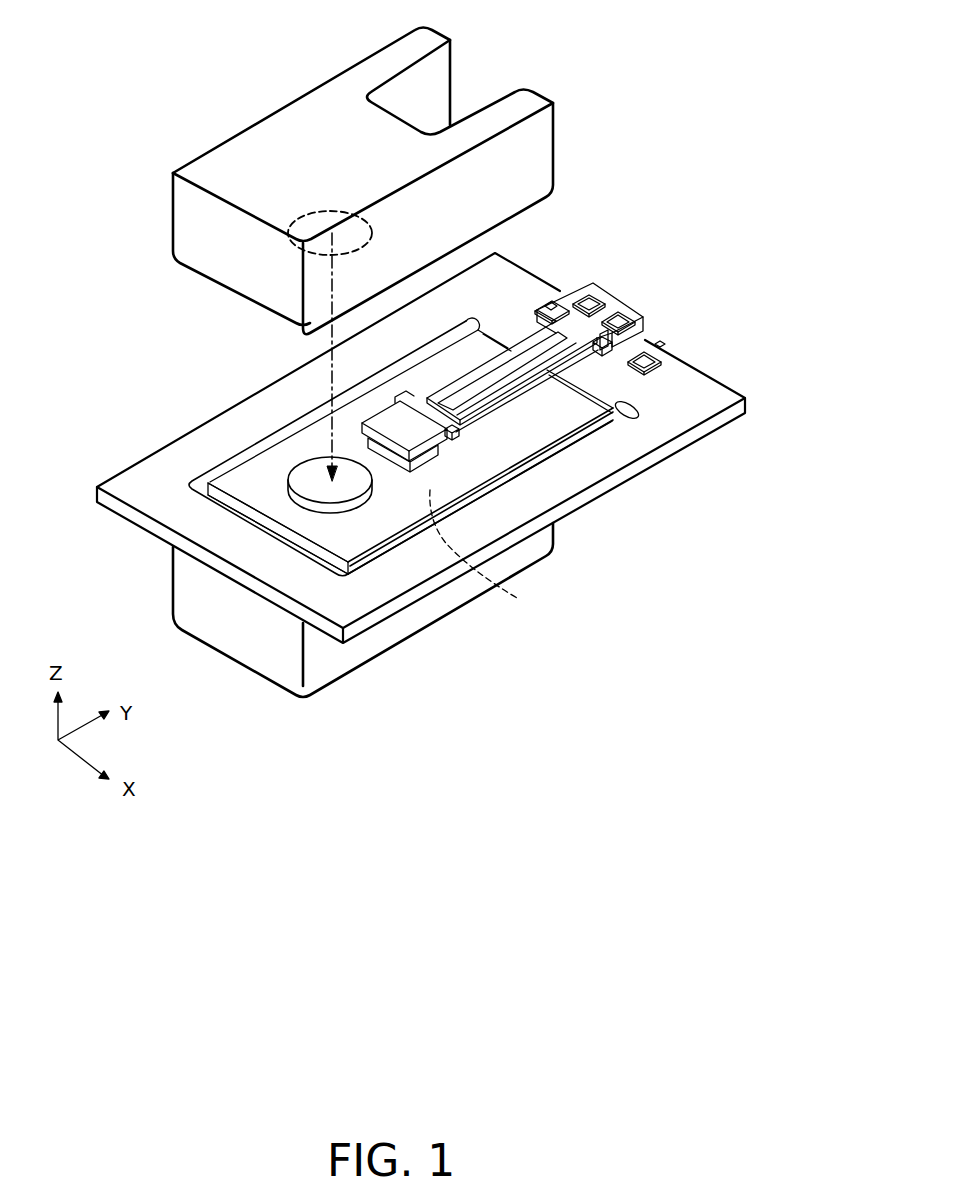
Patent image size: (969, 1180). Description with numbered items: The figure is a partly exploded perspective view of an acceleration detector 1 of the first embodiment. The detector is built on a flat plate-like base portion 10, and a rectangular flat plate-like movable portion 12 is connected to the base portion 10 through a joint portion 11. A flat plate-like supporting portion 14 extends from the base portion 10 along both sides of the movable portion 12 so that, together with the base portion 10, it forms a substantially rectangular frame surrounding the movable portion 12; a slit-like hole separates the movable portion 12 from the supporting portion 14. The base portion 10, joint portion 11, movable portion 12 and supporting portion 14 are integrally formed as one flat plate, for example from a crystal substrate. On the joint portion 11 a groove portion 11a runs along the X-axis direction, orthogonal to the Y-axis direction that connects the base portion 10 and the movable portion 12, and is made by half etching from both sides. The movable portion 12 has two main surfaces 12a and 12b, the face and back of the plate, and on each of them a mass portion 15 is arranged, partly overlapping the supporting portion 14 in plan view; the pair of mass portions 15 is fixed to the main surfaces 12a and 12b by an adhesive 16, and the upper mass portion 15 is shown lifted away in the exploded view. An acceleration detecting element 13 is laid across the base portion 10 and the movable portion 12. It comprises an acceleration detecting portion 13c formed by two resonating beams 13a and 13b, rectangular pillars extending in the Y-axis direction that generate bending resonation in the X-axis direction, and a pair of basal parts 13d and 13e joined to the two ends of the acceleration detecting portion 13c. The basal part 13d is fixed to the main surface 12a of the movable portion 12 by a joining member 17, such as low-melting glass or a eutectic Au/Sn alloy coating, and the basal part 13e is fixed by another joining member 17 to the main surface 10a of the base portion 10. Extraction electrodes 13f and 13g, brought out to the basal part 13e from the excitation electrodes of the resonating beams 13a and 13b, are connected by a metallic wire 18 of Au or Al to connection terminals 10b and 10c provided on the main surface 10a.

The acceleration detector 1 is at (620, 49).
The base portion 10 is at (475, 417).
The main surface of the base portion 10a is at (542, 302).
The connection terminal 10b is at (558, 300).
The connection terminal 10c is at (658, 345).
The joint portion 11 is at (617, 425).
The groove portion 11a is at (628, 416).
The movable portion 12 is at (506, 416).
The main surface of the movable portion 12a is at (453, 488).
The main surface of the movable portion 12b is at (499, 551).
The acceleration detecting element 13 is at (623, 288).
The resonating beam 13a is at (528, 338).
The resonating beam 13b is at (605, 422).
The acceleration detecting portion 13c is at (567, 405).
The basal part 13d is at (385, 415).
The basal part 13e is at (603, 330).
The extraction electrode 13f is at (583, 290).
The extraction electrode 13g is at (622, 317).
The supporting portion 14 is at (170, 458).
The mass portion 15 is at (258, 135).
The adhesive 16 is at (302, 477).
The joining member 17 is at (394, 458).
The metallic wire 18 is at (652, 353).